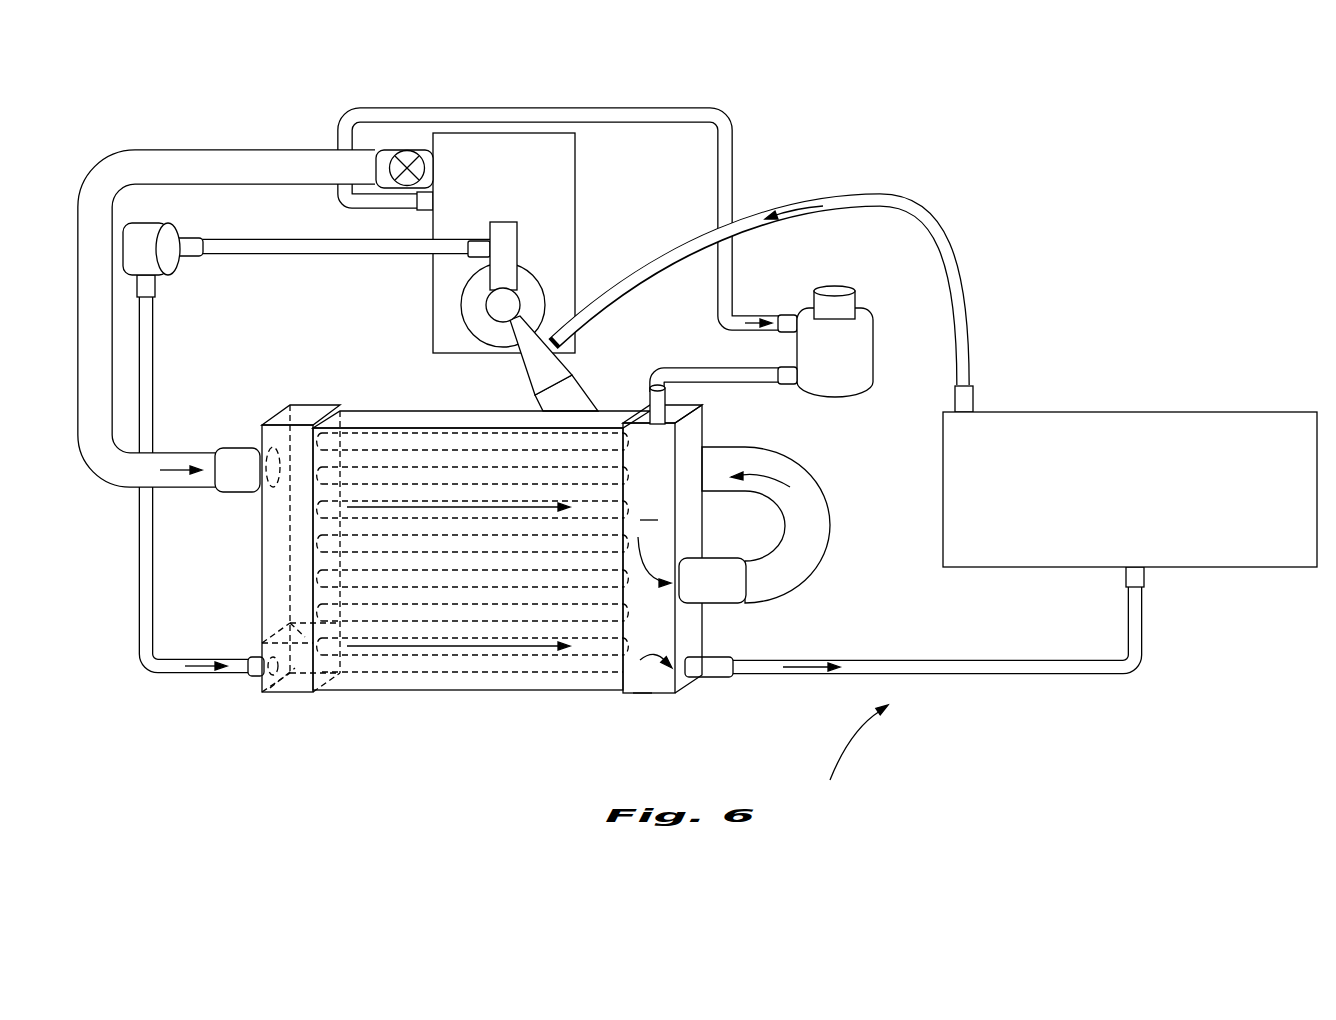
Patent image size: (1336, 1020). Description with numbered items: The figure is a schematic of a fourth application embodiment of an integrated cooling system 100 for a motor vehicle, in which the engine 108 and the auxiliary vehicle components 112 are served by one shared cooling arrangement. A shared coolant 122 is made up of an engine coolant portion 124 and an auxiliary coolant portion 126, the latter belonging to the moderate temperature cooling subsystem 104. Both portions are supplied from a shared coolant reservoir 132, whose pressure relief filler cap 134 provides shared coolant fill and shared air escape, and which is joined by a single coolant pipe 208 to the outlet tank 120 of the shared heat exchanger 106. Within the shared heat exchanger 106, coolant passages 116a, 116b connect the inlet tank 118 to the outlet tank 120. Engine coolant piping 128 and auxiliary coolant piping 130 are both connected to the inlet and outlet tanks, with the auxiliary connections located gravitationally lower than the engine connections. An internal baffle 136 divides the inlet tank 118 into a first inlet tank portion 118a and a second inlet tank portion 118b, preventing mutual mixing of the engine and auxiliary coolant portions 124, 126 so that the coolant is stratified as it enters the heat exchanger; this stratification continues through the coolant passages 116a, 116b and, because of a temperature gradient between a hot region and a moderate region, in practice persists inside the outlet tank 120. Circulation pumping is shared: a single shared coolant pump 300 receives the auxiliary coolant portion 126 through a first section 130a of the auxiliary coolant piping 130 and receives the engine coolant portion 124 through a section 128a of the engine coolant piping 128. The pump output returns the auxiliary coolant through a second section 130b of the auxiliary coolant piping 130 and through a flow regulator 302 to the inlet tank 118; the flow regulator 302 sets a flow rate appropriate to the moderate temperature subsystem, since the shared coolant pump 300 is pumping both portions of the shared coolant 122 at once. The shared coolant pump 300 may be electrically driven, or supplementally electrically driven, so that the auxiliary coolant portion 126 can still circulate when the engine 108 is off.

The integrated cooling system 100 is at (500, 548).
The moderate temperature cooling subsystem 104 is at (847, 756).
The shared heat exchanger 106 is at (450, 415).
The engine 108 is at (577, 223).
The auxiliary vehicle components 112 is at (1040, 412).
The coolant passage 116a is at (607, 500).
The coolant passage 116b is at (570, 648).
The inlet tank 118 is at (247, 564).
The first inlet tank portion 118a is at (277, 583).
The second inlet tank portion 118b is at (293, 670).
The outlet tank 120 is at (802, 208).
The shared coolant 122 is at (509, 488).
The engine coolant portion 124 is at (473, 507).
The auxiliary coolant portion 126 is at (197, 673).
The engine coolant piping 128 is at (245, 462).
The section of engine coolant piping 128a is at (596, 394).
The first section of auxiliary coolant piping 130a is at (875, 197).
The second section of auxiliary coolant piping 130b is at (333, 240).
The auxiliary coolant piping 130 is at (257, 673).
The shared coolant reservoir 132 is at (873, 362).
The pressure relief filler cap 134 is at (853, 305).
The internal baffle 136 is at (290, 623).
The coolant pipe 208 is at (395, 150).
The shared coolant pump 300 is at (461, 303).
The flow regulator 302 is at (160, 223).